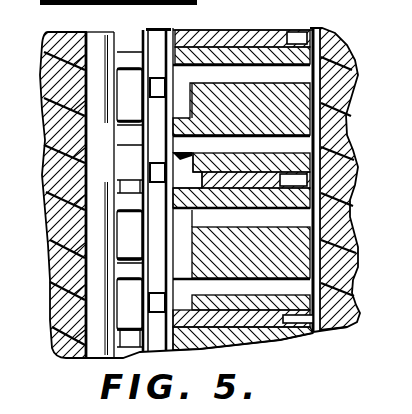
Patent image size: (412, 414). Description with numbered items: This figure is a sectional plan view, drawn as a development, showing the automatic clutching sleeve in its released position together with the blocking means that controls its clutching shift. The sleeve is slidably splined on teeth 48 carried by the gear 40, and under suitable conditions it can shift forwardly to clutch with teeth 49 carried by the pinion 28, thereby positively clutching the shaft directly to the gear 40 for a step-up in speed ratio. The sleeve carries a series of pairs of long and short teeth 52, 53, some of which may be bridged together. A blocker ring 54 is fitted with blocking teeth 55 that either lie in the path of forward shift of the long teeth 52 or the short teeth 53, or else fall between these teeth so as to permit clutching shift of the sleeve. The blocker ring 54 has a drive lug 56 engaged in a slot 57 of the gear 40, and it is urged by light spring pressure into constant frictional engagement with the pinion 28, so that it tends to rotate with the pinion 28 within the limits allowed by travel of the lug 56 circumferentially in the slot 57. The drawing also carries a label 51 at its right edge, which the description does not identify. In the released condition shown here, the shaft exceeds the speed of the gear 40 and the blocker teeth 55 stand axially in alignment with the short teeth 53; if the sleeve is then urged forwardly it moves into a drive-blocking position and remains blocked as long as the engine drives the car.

The pinion 28 is at (47, 155).
The gear 40 is at (333, 82).
The teeth 48 is at (282, 184).
The teeth 49 is at (131, 52).
The packing block 51 is at (295, 120).
The long teeth 52 is at (193, 112).
The short teeth 53 is at (200, 92).
The blocker ring 54 is at (164, 28).
The blocking teeth 55 is at (157, 90).
The drive lug 56 is at (143, 178).
The slot 57 is at (160, 172).